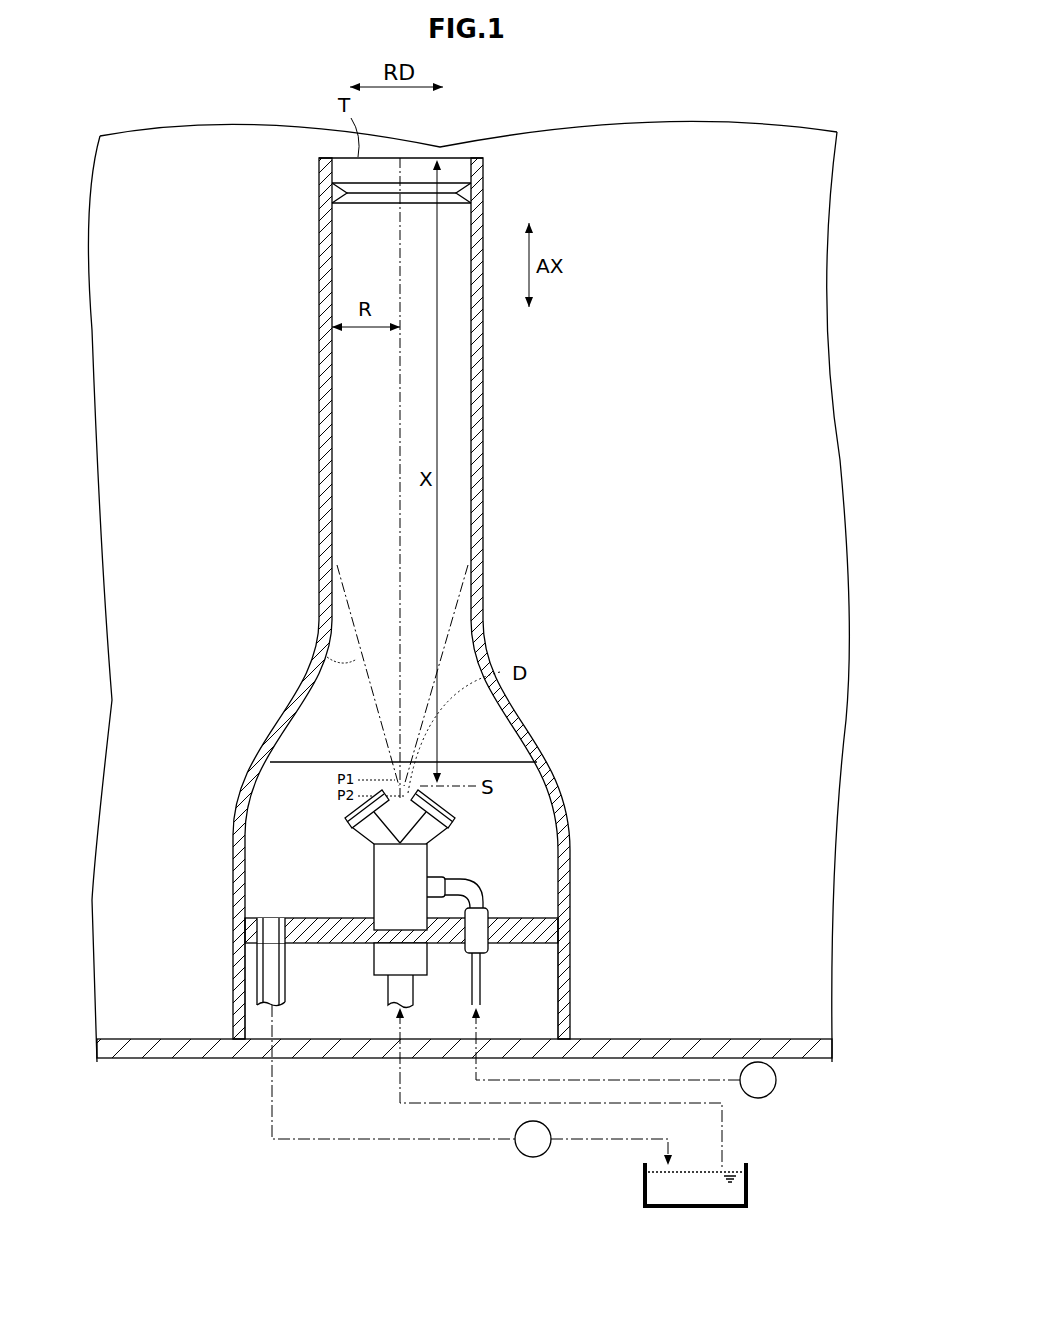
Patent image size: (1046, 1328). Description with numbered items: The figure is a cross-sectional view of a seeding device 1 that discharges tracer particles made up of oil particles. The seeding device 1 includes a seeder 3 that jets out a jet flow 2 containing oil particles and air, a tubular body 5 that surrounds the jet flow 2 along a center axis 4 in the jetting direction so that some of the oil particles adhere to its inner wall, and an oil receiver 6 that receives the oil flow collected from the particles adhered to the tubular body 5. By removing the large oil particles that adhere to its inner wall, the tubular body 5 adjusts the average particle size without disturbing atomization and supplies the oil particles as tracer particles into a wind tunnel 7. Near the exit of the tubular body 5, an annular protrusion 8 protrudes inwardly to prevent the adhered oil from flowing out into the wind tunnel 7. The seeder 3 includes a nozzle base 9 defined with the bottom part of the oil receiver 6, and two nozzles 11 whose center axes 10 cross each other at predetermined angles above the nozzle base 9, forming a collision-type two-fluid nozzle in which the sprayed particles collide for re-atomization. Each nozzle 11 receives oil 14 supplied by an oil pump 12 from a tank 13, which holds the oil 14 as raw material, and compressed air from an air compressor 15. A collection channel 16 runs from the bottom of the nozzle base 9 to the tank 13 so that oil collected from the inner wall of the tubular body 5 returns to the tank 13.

The seeding device 1 is at (627, 421).
The jet flow 2 is at (322, 656).
The seeder 3 is at (510, 817).
The center axis 4 is at (400, 258).
The tubular body 5 is at (490, 437).
The oil receiver 6 is at (565, 766).
The wind tunnel 7 is at (105, 206).
The annular protrusion 8 is at (357, 204).
The nozzle base 9 is at (540, 912).
The center axes 10 is at (348, 826).
The nozzles 11 is at (355, 812).
The oil pump 12 is at (527, 1157).
The tank 13 is at (750, 1191).
The oil 14 is at (655, 1193).
The air compressor 15 is at (770, 1094).
The collection channel 16 is at (268, 975).